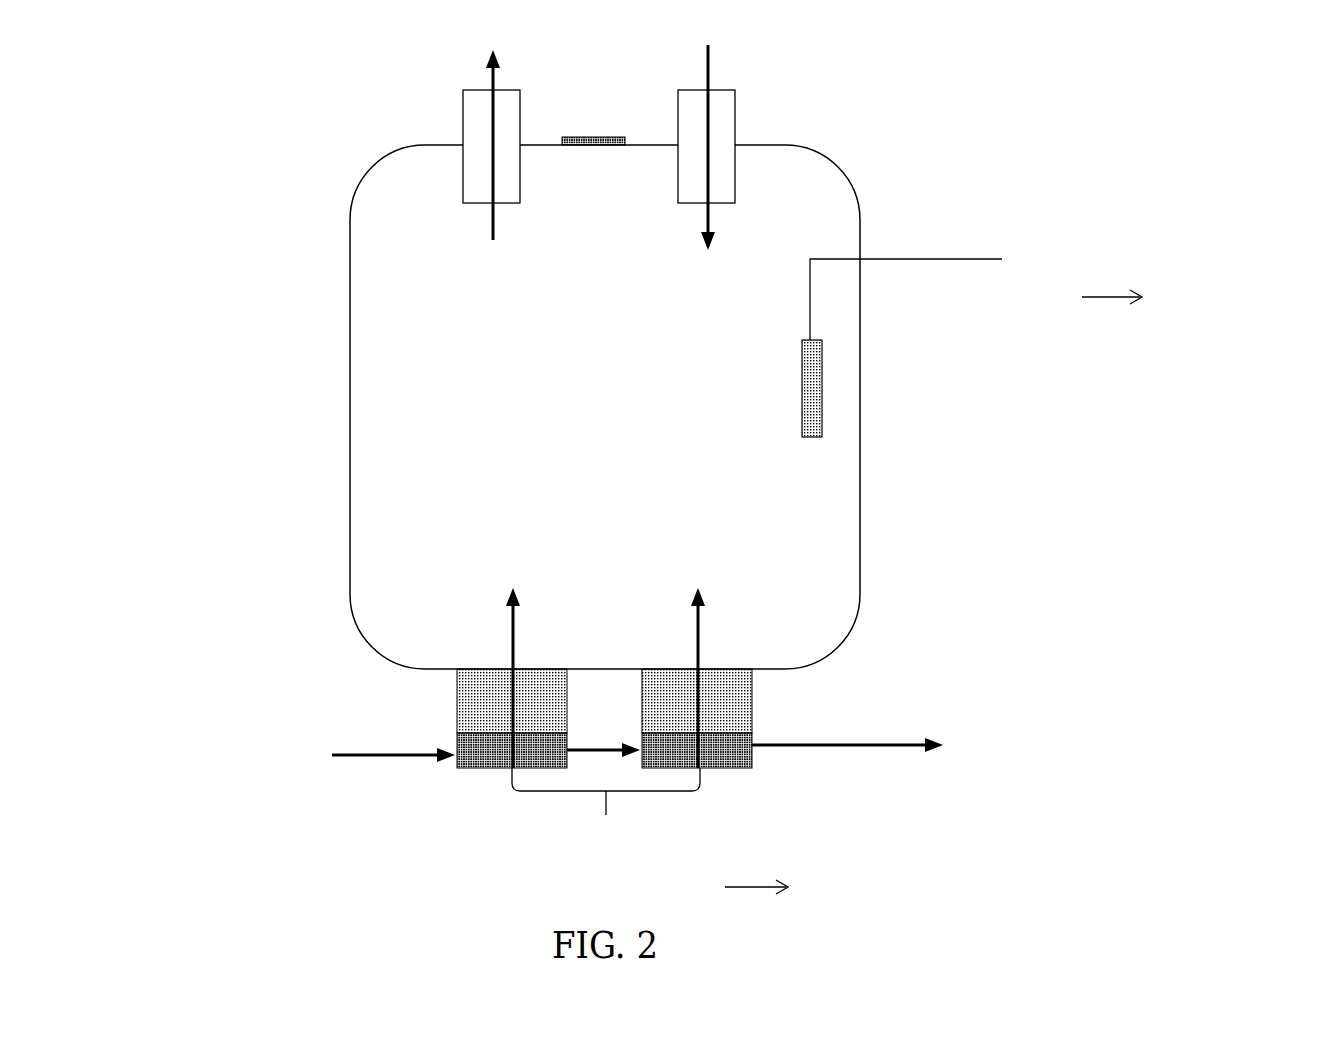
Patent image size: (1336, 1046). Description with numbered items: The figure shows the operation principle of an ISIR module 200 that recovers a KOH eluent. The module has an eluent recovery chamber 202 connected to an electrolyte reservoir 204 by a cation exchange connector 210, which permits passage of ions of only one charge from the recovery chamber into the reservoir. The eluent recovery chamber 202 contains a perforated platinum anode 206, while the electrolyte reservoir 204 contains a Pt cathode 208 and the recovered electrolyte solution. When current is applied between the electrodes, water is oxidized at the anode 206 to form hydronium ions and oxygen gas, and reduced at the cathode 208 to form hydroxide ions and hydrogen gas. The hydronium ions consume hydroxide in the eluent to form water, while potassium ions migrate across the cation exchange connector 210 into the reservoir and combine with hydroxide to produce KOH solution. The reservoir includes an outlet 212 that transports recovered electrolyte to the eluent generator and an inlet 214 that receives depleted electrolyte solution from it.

The ISIR module 200 is at (298, 224).
The eluent recovery chamber 202 is at (458, 737).
The electrolyte reservoir 204 is at (605, 382).
The perforated platinum electrode 206 is at (737, 820).
The Pt electrode 208 is at (1052, 315).
The exchange connector 210 is at (752, 702).
The outlet 212 is at (431, 145).
The inlet 214 is at (776, 147).